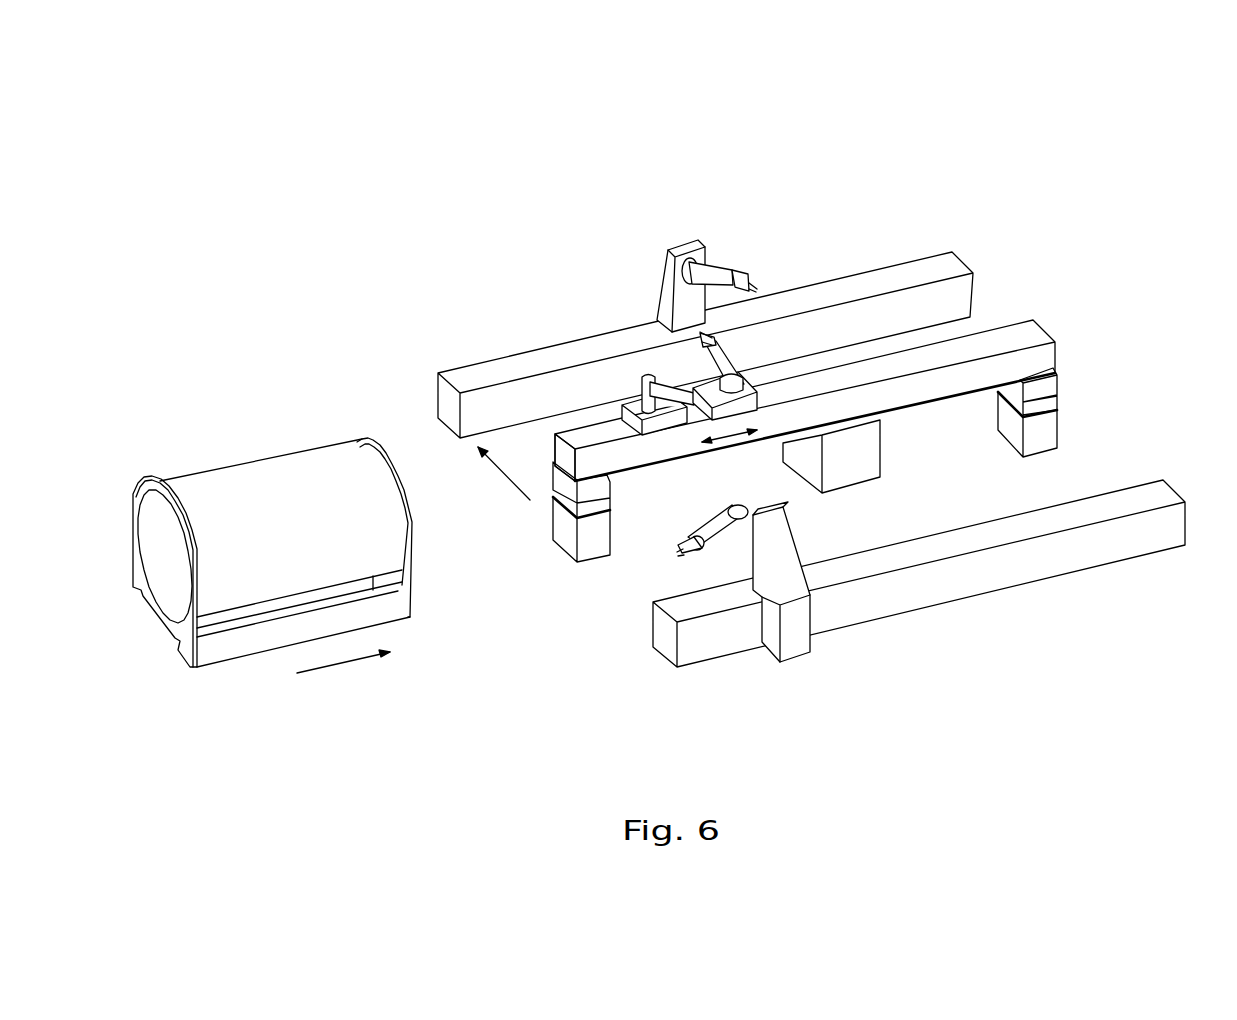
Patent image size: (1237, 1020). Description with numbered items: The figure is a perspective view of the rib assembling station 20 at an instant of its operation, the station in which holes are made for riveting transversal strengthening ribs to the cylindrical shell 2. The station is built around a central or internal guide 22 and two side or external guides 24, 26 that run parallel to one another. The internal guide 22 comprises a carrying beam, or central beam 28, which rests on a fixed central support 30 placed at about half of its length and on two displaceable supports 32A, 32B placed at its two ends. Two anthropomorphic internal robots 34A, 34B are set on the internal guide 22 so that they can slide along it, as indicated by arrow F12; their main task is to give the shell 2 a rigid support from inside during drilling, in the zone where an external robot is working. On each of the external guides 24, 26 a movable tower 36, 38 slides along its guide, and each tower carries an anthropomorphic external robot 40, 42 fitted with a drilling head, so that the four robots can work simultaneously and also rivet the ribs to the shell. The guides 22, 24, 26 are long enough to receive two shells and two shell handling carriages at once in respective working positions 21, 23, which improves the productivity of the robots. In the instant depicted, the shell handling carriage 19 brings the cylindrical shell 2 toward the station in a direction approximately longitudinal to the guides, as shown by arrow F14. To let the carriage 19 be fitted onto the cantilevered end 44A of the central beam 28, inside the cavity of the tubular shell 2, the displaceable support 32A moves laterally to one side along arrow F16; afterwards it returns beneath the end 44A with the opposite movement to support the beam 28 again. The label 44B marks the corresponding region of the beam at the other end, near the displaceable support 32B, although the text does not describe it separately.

The cylindrical shell 2 is at (298, 467).
The shell handling carriage 19 is at (227, 647).
The rib assembling station 20 is at (610, 125).
The working position 21 is at (623, 217).
The internal guide 22 is at (853, 363).
The working position 23 is at (927, 180).
The external guide 24 is at (503, 368).
The external guide 26 is at (1162, 493).
The central beam 28 is at (853, 363).
The fixed central support 30 is at (863, 477).
The displaceable support 32A is at (563, 538).
The displaceable support 32B is at (1046, 443).
The internal robot 34A is at (667, 398).
The internal robot 34B is at (745, 342).
The movable tower 36 is at (663, 293).
The movable tower 38 is at (792, 651).
The external robot 40 is at (713, 262).
The external robot 42 is at (717, 540).
The end of the central beam 44A is at (573, 437).
The guide portion B 44B is at (1032, 330).
The arrow F12 is at (724, 442).
The arrow F14 is at (327, 667).
The arrow F16 is at (502, 473).